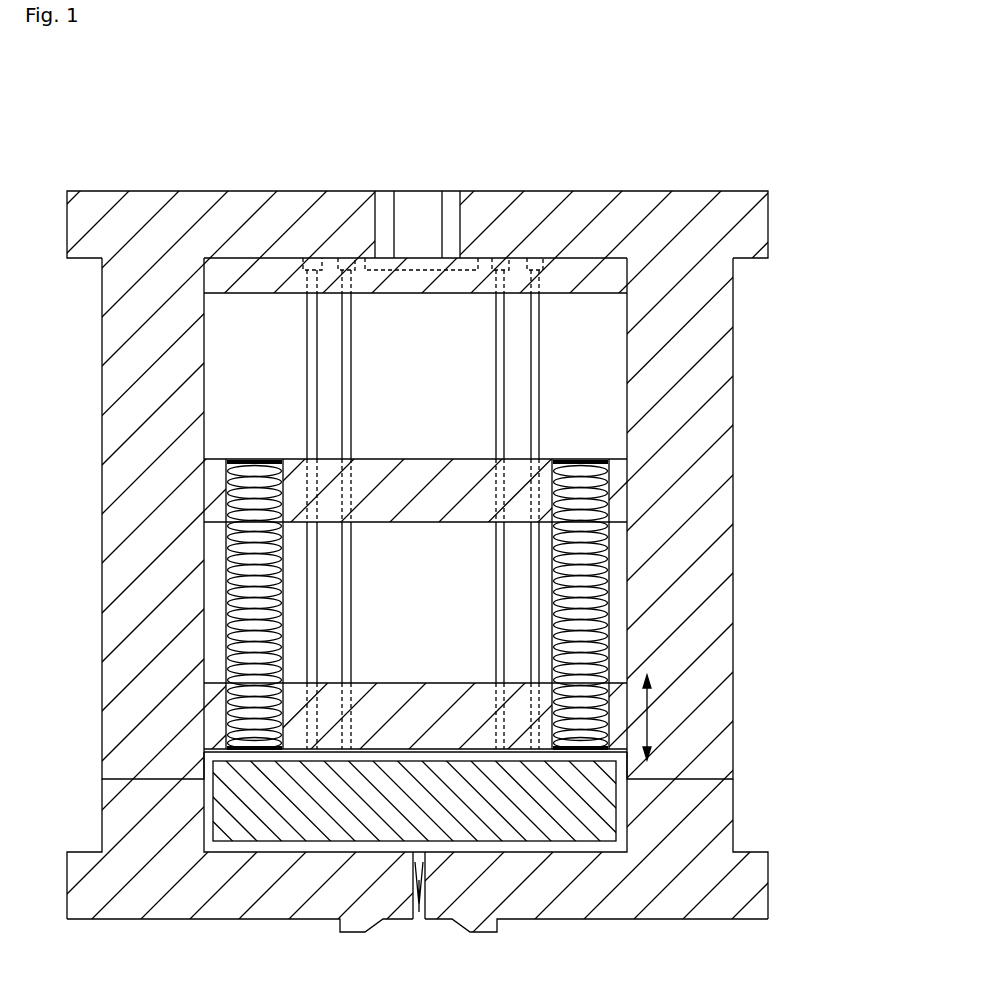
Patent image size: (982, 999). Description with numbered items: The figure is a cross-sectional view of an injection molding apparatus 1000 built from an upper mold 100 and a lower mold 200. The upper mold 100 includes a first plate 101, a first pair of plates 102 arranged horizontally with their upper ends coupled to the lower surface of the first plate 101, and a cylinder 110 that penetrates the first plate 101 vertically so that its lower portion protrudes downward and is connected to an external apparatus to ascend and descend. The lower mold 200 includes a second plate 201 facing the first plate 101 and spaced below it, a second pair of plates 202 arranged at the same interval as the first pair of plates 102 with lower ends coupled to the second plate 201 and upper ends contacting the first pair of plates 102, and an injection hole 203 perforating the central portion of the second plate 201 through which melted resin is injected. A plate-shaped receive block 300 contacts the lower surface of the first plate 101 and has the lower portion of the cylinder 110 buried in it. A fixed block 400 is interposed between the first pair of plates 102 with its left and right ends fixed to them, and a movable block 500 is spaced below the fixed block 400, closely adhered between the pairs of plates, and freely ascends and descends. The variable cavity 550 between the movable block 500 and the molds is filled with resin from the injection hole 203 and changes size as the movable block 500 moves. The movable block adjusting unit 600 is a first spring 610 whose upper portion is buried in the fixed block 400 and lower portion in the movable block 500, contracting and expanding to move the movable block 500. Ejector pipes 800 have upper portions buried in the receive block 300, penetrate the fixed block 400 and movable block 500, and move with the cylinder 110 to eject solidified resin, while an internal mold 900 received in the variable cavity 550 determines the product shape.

The upper mold 100 is at (417, 405).
The first plate 101 is at (318, 215).
The first pair of plates 102 is at (658, 365).
The cylinder 110 is at (417, 175).
The lower mold 200 is at (493, 850).
The second plate 201 is at (703, 878).
The second pair of plates 202 is at (160, 833).
The injection hole 203 is at (420, 892).
The receive block 300 is at (612, 283).
The fixed block 400 is at (407, 482).
The movable block 500 is at (435, 692).
The variable cavity 550 is at (618, 792).
The movable block adjusting unit 600 is at (537, 604).
The first spring 610 is at (597, 584).
The ejector pipe 800 is at (540, 389).
The internal mold 900 is at (330, 775).
The injection molding apparatus 1000 is at (491, 499).